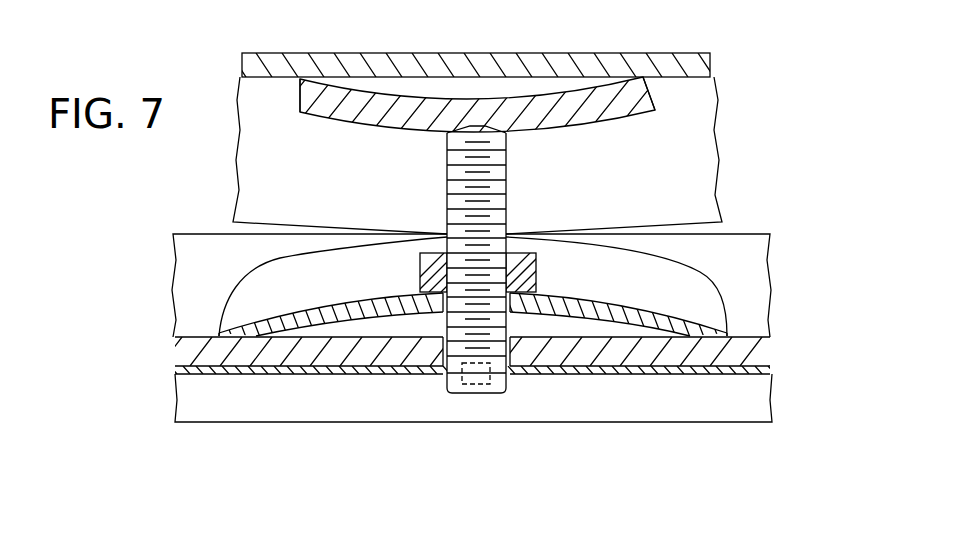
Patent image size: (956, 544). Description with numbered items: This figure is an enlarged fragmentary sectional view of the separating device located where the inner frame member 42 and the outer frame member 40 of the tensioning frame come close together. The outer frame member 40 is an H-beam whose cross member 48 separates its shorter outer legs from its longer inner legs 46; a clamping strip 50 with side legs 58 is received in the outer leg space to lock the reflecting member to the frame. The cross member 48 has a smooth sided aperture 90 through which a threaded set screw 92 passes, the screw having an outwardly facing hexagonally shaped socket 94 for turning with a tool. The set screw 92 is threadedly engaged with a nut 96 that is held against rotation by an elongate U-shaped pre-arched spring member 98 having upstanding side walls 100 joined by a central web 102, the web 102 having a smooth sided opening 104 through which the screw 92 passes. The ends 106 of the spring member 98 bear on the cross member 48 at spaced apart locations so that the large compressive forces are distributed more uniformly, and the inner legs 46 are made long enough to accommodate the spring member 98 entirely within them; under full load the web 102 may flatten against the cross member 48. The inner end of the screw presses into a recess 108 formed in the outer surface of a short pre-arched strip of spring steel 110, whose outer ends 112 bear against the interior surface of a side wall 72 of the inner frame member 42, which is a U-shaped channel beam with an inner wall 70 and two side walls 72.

The outer frame member 40 is at (268, 431).
The inner frame member 42 is at (325, 43).
The inner legs 46 is at (742, 290).
The cross member 48 is at (658, 355).
The clamping strip 50 is at (805, 374).
The side legs 58 is at (815, 8).
The inner wall 70 is at (440, 53).
The side walls 72 is at (393, 188).
The smooth sided aperture 90 is at (512, 372).
The threaded set screw 92 is at (506, 217).
The hexagonally shaped socket 94 is at (481, 392).
The nut 96 is at (537, 277).
The pre-arched spring member 98 is at (722, 253).
The upstanding side walls 100 is at (272, 263).
The central web 102 is at (362, 298).
The smooth sided opening 104 is at (443, 296).
The ends 106 is at (217, 333).
The recess 108 is at (487, 132).
The pre-arched strip of spring steel 110 is at (590, 123).
The outer ends 112 is at (300, 100).